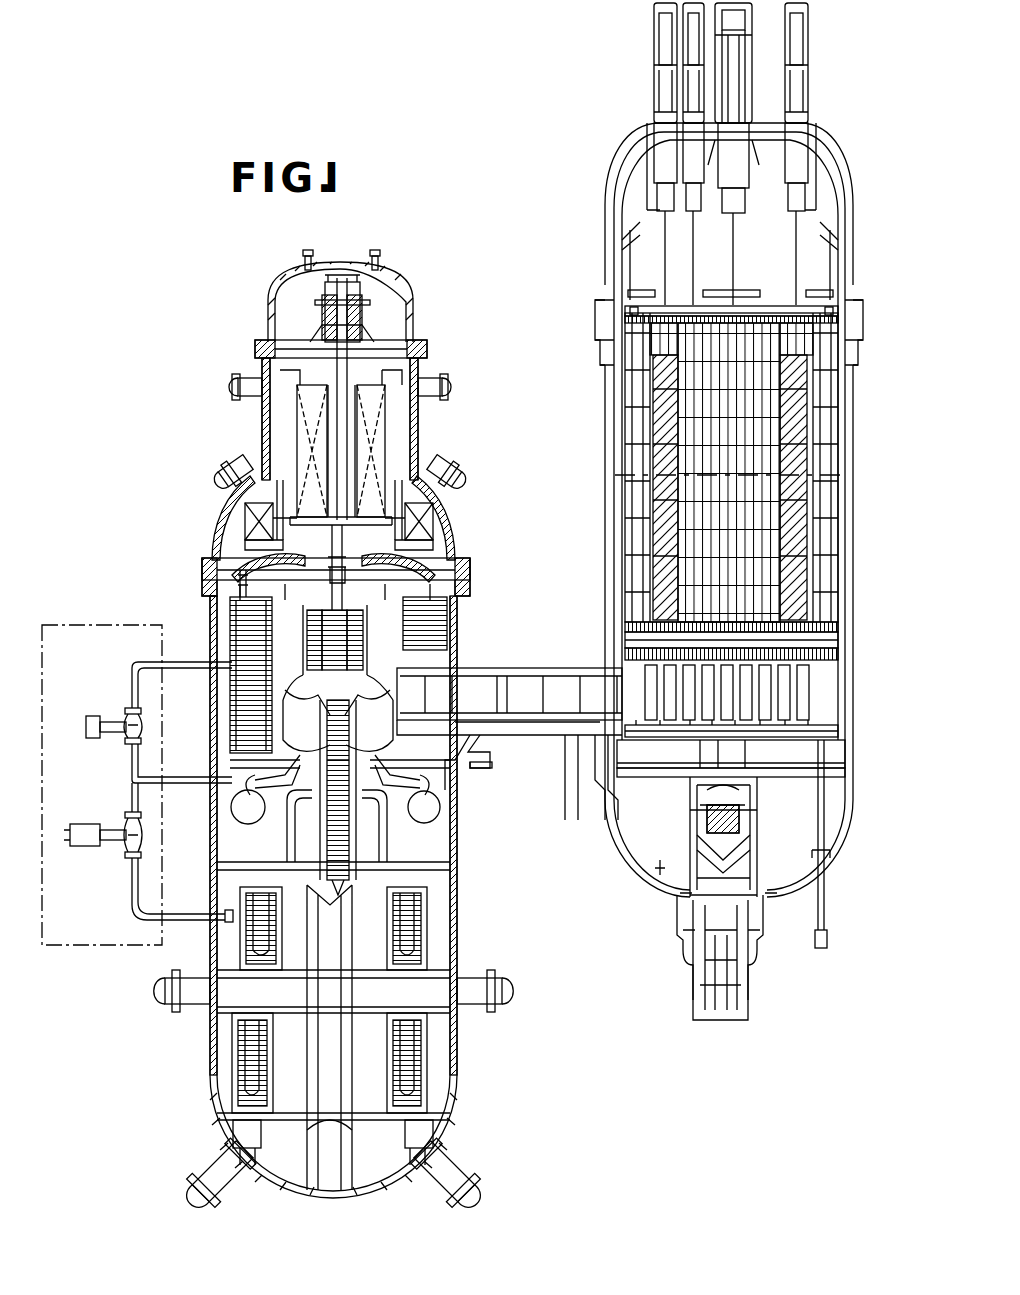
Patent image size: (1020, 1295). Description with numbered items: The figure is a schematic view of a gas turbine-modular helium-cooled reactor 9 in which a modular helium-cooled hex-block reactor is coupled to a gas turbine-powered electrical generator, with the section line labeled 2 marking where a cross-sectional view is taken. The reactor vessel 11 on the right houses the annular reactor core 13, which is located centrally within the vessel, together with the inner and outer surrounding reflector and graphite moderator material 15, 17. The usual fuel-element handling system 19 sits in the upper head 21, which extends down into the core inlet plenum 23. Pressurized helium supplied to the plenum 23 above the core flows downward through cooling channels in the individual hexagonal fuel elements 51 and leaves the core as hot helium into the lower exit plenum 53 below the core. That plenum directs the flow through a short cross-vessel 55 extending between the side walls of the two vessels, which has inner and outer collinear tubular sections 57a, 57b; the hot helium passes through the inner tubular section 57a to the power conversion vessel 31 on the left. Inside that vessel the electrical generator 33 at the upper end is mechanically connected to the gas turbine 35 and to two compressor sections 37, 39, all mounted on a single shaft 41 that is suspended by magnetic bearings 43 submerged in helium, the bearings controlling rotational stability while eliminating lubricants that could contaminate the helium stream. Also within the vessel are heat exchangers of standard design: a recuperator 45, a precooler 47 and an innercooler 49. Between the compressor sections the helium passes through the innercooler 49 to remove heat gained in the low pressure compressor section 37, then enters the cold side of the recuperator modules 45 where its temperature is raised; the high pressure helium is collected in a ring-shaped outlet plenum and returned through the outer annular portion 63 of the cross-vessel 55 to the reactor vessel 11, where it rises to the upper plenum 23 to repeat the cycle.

The section line 2- 2 is at (885, 475).
The gas turbine-modular helium-cooled reactor 9 is at (846, 143).
The reactor vessel 11 is at (608, 549).
The reactor core 13 is at (810, 470).
The inner reflector and graphite moderator material 15 is at (815, 350).
The outer reflector and graphite moderator material 17 is at (647, 353).
The fuel-element handling system 19 is at (644, 50).
The upper head 21 is at (612, 222).
The core inlet plenum 23 is at (782, 252).
The power conversion vessel 31 is at (457, 837).
The electrical generator 33 is at (385, 455).
The gas turbine 35 is at (308, 665).
The low pressure compressor section 37 is at (358, 828).
The compressor section 39 is at (400, 780).
The single shaft 41 is at (232, 710).
The magnetic bearings 43 is at (325, 315).
The recuperator 45 is at (232, 632).
The precooler 47 is at (437, 1097).
The innercooler 49 is at (427, 950).
The fuel elements 51 is at (805, 578).
The lower exit plenum 53 is at (780, 711).
The cross-vessel 55 is at (527, 660).
The inner tubular section 57a is at (578, 742).
The outer tubular section 57b is at (508, 733).
The outer annular portion 63 is at (562, 666).